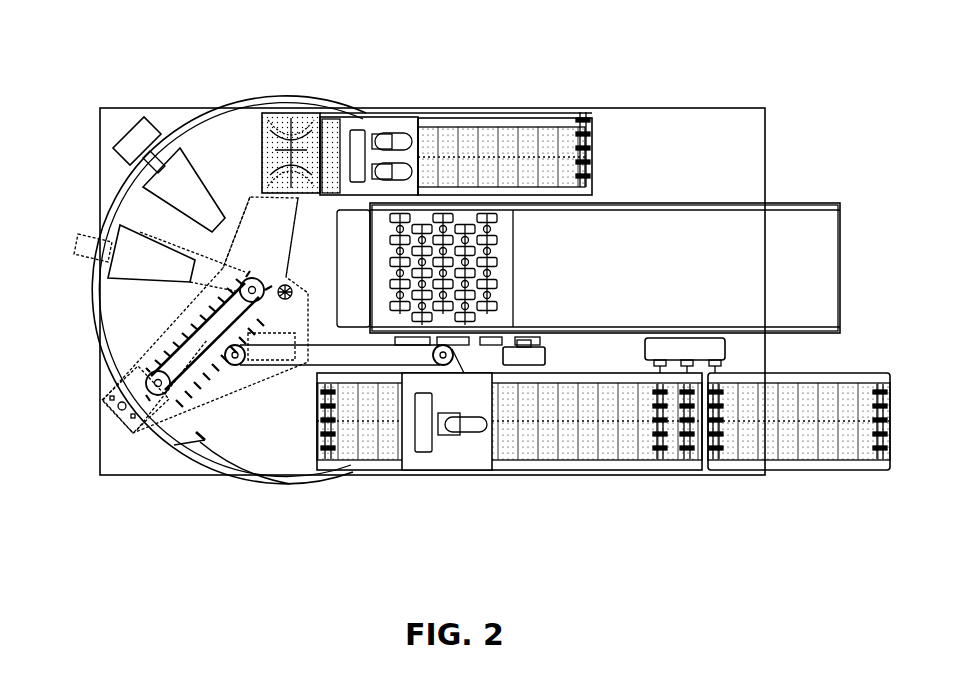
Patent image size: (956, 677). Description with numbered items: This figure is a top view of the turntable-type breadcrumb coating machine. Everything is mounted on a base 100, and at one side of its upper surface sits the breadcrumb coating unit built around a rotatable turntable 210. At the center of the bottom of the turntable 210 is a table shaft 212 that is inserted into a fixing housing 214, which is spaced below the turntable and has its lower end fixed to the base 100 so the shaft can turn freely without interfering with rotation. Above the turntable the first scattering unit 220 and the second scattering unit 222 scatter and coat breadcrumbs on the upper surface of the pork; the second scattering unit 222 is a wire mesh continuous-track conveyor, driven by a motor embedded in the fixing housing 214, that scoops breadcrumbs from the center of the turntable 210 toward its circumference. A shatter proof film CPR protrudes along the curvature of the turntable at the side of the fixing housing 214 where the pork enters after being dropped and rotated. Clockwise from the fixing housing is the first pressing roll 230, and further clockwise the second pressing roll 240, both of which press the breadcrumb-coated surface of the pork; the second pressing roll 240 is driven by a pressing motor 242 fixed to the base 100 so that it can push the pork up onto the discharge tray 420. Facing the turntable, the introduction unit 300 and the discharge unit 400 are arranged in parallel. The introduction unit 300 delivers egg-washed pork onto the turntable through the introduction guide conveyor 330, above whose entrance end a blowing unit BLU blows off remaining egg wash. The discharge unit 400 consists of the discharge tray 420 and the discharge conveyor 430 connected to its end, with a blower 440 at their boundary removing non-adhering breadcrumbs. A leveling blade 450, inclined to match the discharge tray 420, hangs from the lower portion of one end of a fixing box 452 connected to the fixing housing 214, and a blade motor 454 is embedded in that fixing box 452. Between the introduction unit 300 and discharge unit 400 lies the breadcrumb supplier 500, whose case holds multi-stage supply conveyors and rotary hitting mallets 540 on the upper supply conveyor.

The base 100 is at (100, 453).
The turntable 210 is at (93, 305).
The table shaft 212 is at (290, 278).
The fixing housing 214 is at (208, 480).
The first scattering unit 220 is at (217, 385).
The second scattering unit 222 is at (318, 372).
The first pressing roll 230 is at (110, 202).
The second pressing roll 240 is at (188, 112).
The pressing motor 242 is at (123, 110).
The introduction unit 300 is at (590, 480).
The introduction guide conveyor 330 is at (368, 478).
The discharge unit 400 is at (437, 106).
The discharge tray 420 is at (262, 112).
The discharge conveyor 430 is at (495, 116).
The blower 440 is at (385, 105).
The leveling blade 450 is at (262, 150).
The fixing box 452 is at (248, 218).
The blade motor 454 is at (296, 113).
The breadcrumb supplier 500 is at (778, 238).
The rotary hitting mallets 540 is at (498, 263).
The shatter proof film CPR is at (130, 478).
The blowing unit BLU is at (465, 433).